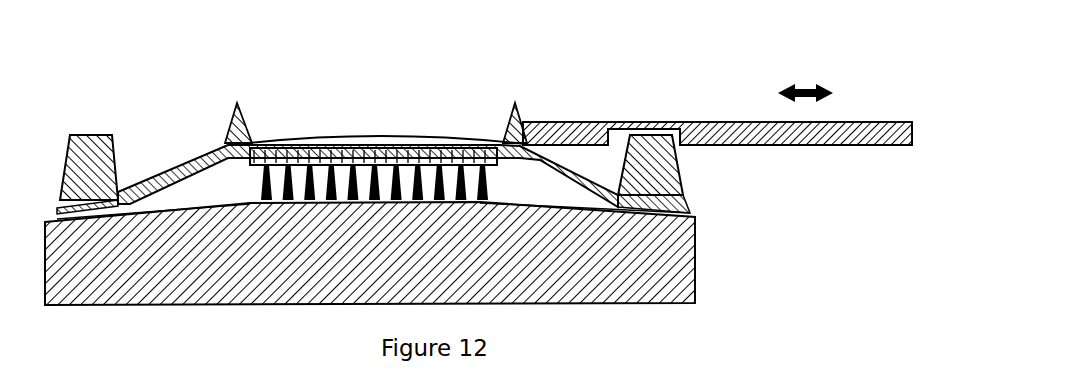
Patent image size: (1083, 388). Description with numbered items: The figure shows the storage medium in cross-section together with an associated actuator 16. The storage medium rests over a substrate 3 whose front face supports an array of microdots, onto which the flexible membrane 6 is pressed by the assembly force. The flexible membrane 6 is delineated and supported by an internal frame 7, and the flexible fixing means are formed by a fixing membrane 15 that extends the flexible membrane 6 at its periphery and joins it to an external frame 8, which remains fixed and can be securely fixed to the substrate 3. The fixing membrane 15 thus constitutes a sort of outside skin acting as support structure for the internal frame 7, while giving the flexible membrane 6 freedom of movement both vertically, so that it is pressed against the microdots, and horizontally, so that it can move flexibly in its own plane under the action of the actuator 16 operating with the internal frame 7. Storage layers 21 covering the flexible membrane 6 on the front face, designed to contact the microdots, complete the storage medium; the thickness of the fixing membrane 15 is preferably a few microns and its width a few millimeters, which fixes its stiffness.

The substrate 3 is at (697, 268).
The flexible membrane 6 is at (368, 138).
The internal frame 7 is at (245, 140).
The external frame 8 is at (682, 185).
The fixing membrane 15 is at (192, 158).
The actuator 16 is at (733, 122).
The storage layers 21 is at (418, 155).